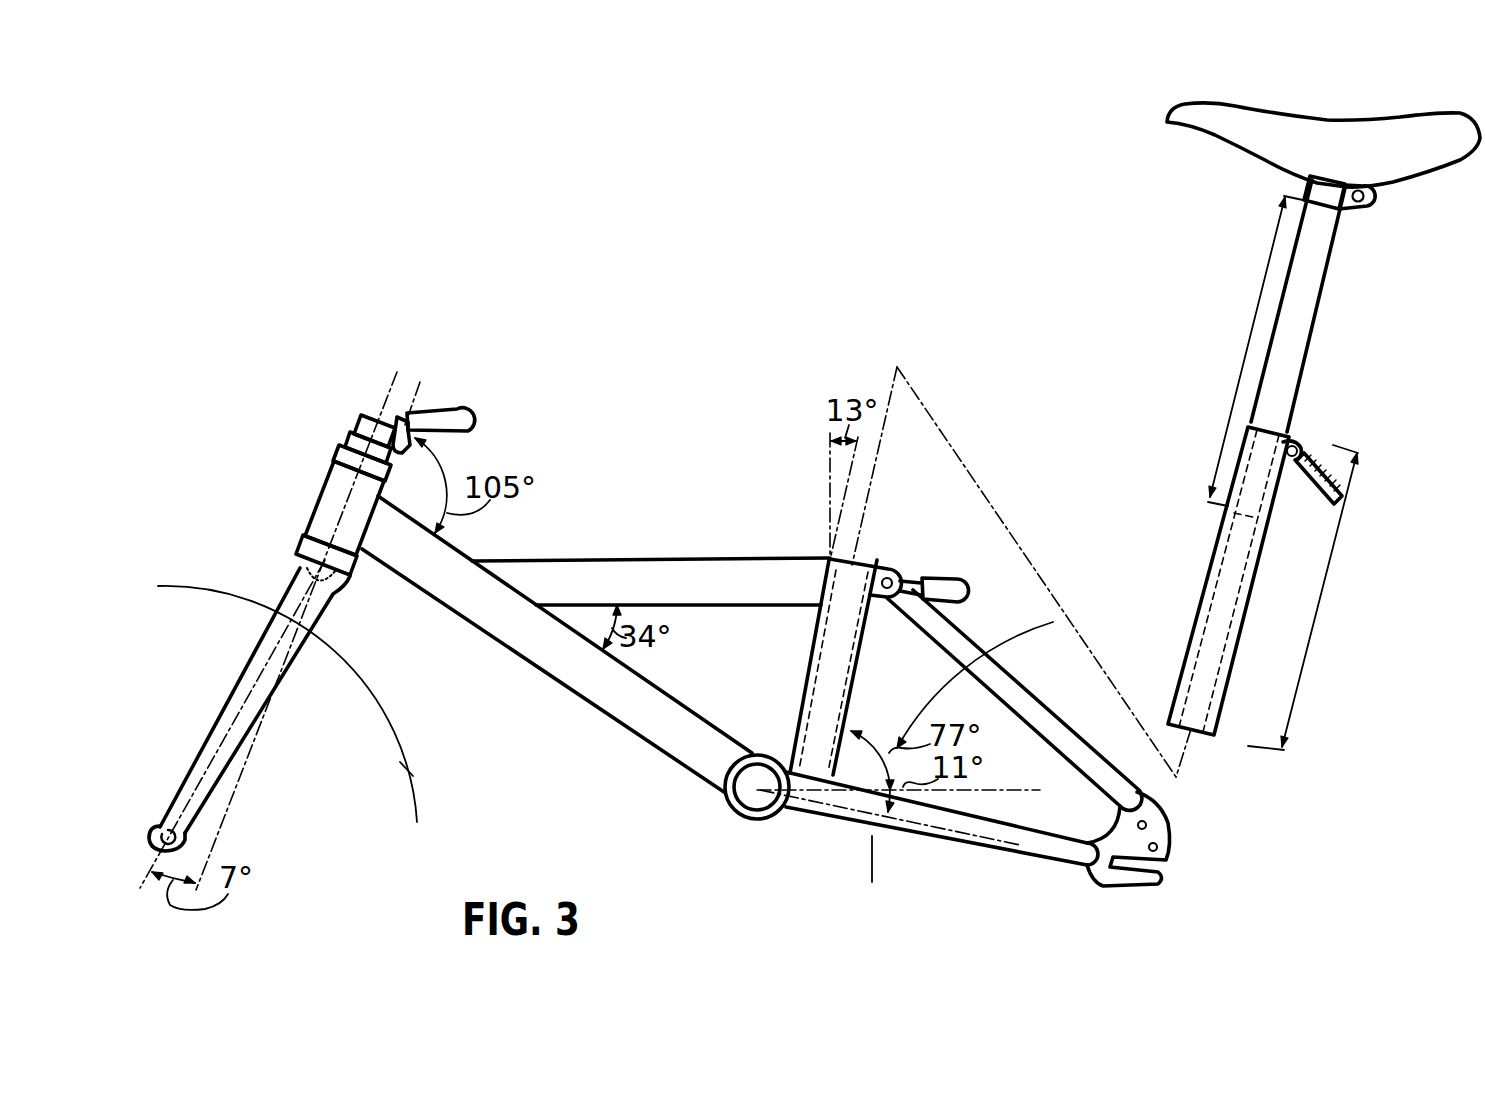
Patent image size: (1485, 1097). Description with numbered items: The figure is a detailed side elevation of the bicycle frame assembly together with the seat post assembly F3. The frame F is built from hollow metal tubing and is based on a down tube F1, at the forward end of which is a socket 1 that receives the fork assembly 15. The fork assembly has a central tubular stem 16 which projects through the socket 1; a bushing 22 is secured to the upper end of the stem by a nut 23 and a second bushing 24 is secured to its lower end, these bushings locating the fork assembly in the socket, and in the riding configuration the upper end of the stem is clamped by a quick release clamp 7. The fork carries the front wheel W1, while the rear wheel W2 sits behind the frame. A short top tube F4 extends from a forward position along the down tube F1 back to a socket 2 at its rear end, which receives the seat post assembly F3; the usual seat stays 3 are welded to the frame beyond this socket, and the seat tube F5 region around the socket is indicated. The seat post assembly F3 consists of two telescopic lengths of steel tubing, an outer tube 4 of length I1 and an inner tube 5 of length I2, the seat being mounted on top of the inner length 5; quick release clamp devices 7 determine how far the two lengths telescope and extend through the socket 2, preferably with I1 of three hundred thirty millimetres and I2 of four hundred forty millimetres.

The socket 1 is at (320, 500).
The socket 2 is at (872, 627).
The seat stays 3 is at (1050, 723).
The outer length of steel tubing 4 is at (1241, 632).
The inner length of steel tubing 5 is at (1305, 349).
The quick release clamp 7 is at (437, 433).
The fork assembly 15 is at (303, 664).
The central stem 16 is at (356, 424).
The bushing 22 is at (335, 463).
The nut 23 is at (347, 447).
The bushing 24 is at (301, 545).
The frame F is at (662, 756).
The down tube F1 is at (550, 678).
The seat post assembly F3 is at (1222, 410).
The top tube F4 is at (738, 606).
The seat tube F5 is at (848, 711).
The wheel W1 is at (400, 769).
The wheel W2 is at (885, 860).
The length of outer tube I1 is at (1255, 351).
The length of inner tube I2 is at (1303, 597).